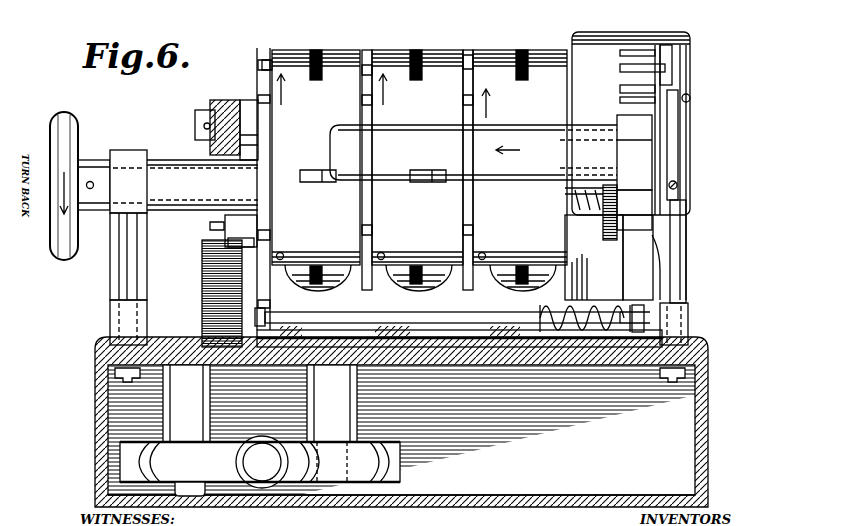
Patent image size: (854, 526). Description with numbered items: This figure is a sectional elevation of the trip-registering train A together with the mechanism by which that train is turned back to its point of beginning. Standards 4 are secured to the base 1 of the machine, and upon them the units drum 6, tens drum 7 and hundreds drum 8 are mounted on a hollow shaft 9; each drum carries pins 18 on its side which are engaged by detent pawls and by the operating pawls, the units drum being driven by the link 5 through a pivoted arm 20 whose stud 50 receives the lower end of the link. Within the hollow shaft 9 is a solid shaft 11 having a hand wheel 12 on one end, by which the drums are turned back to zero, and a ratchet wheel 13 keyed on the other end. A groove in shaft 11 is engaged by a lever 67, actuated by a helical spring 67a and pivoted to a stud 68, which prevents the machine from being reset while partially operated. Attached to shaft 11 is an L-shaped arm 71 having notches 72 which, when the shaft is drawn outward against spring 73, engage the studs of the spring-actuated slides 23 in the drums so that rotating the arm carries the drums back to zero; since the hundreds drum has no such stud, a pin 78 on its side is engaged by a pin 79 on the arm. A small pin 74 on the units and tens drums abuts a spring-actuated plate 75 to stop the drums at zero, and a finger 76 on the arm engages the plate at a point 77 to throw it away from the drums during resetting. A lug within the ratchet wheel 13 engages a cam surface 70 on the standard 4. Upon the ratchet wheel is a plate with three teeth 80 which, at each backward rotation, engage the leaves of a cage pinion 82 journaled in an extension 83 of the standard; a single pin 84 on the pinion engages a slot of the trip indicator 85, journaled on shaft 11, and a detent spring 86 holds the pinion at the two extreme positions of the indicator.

The base 1 is at (401, 422).
The standard 4 is at (113, 296).
The link 5 is at (214, 110).
The units drum 6 is at (288, 62).
The tens drum 7 is at (403, 62).
The hundreds drum 8 is at (503, 62).
The hollow shaft 9 is at (165, 172).
The solid shaft 11 is at (113, 162).
The hand wheel 12 is at (57, 236).
The ratchet wheel 13 is at (640, 232).
The pin 18 is at (262, 64).
The pivoted arm 20 is at (262, 122).
The spring-actuated slide 23 is at (300, 178).
The stud 50 is at (200, 126).
The lever 67 is at (241, 231).
The helical spring 67a is at (204, 288).
The stud 68 is at (222, 220).
The cam surface 70 is at (248, 484).
The L-shaped arm 71 is at (597, 118).
The notch 72 is at (430, 178).
The spring 73 is at (587, 232).
The pin 74 is at (310, 274).
The spring-actuated plate 75 is at (372, 272).
The finger 76 is at (610, 222).
The engagement point 77 is at (595, 273).
The pin 78 is at (558, 186).
The pin 79 is at (600, 170).
The teeth 80 is at (656, 224).
The cage pinion 82 is at (640, 69).
The extension 83 is at (672, 78).
The pin 84 is at (690, 100).
The trip indicator 85 is at (637, 40).
The detent spring 86 is at (673, 118).
The trip-registering train A is at (388, 62).